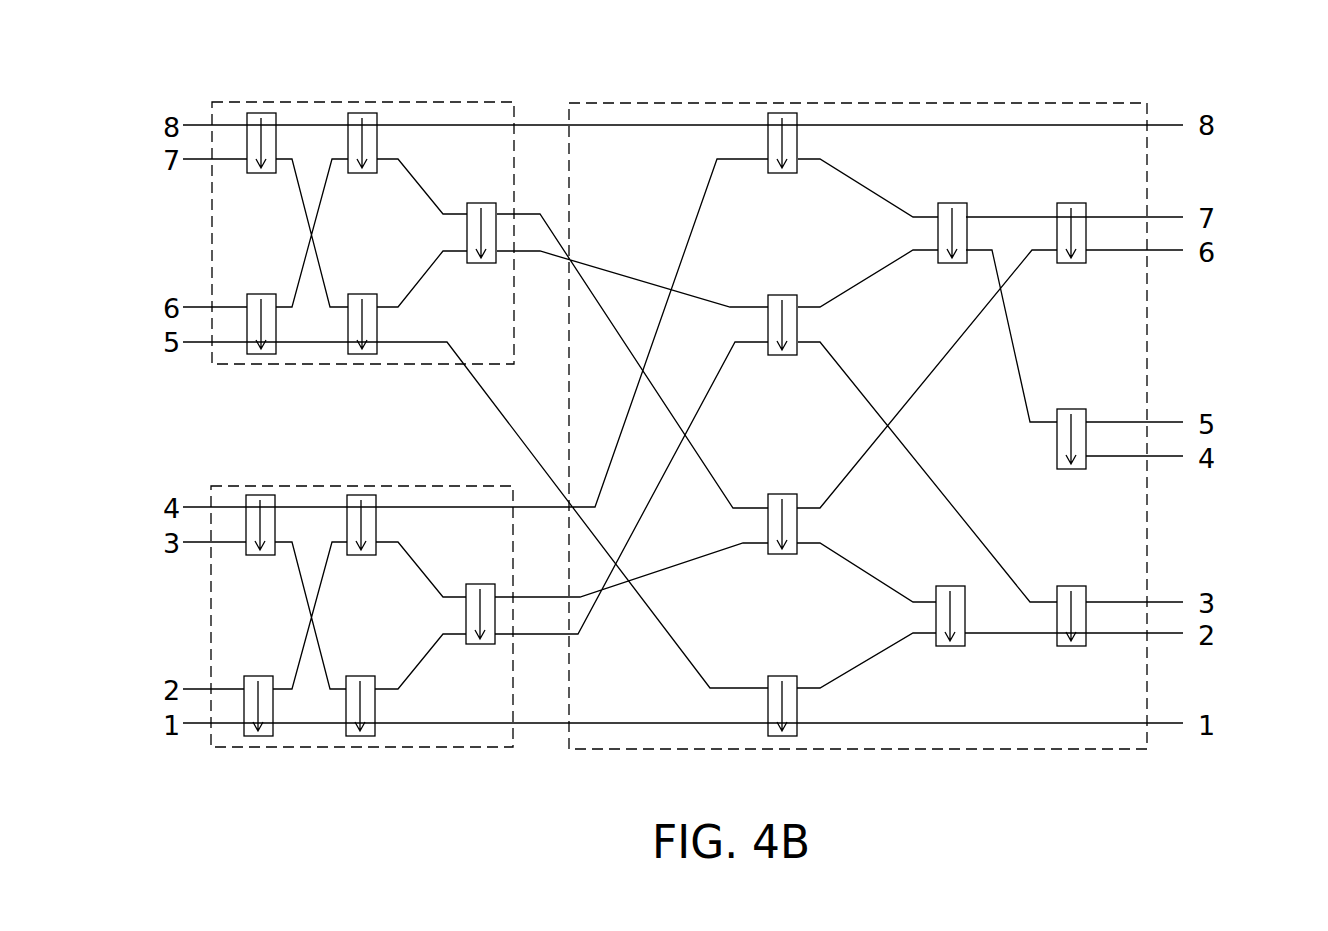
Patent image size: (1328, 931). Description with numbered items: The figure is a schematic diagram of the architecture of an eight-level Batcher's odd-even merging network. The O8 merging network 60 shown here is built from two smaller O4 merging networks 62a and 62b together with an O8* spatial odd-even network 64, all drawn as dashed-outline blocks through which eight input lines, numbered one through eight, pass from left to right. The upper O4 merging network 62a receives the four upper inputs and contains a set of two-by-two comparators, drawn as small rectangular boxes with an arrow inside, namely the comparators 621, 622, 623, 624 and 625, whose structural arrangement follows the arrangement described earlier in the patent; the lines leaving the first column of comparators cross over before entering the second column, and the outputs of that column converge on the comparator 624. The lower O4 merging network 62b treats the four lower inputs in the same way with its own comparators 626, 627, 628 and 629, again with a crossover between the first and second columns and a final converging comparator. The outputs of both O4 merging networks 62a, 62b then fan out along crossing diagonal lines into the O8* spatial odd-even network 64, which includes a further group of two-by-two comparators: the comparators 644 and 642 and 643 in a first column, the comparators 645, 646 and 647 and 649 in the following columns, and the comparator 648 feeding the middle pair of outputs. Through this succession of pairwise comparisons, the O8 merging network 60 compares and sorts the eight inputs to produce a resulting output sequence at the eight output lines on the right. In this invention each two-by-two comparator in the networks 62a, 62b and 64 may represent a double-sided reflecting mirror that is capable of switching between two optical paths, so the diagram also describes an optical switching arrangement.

The O8 merging network 60 is at (1266, 142).
The O4 merging network 62a is at (492, 102).
The O4 merging network 62b is at (490, 747).
The O8* spatial odd-even network 64 is at (1008, 102).
The 2-by-2 comparator 621 is at (360, 113).
The 2-by-2 comparator 622 is at (258, 354).
The 2-by-2 comparator 623 is at (360, 354).
The 2-by-2 comparator 624 is at (481, 203).
The 2-by-2 comparator 625 is at (258, 113).
The 2-by-2 comparator 626 is at (258, 495).
The 2-by-2 comparator 627 is at (258, 737).
The 2-by-2 comparator 628 is at (360, 495).
The 2-by-2 comparator 629 is at (360, 737).
The 2-by-2 comparator 642 is at (782, 295).
The 2-by-2 comparator 643 is at (782, 554).
The 2-by-2 comparator 644 is at (782, 113).
The 2-by-2 comparator 645 is at (952, 203).
The 2-by-2 comparator 646 is at (950, 647).
The 2-by-2 comparator 647 is at (1071, 203).
The 2-by-2 comparator 648 is at (1071, 469).
The 2-by-2 comparator 649 is at (1071, 647).